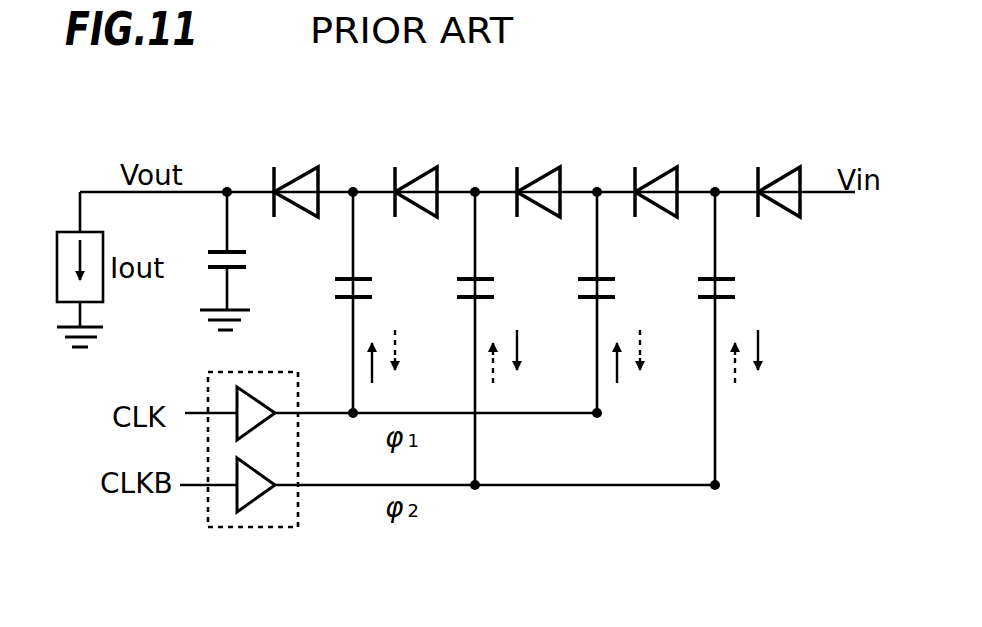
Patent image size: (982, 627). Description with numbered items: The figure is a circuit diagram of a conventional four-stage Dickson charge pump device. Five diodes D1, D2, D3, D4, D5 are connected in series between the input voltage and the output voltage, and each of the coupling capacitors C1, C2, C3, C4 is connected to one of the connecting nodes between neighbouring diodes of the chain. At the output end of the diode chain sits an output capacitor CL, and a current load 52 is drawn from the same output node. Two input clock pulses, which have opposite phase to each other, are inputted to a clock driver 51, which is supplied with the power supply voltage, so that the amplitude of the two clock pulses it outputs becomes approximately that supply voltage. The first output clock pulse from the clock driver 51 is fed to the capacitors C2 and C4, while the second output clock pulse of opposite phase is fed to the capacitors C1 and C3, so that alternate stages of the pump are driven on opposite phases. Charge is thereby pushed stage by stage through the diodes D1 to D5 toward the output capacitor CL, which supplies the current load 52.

The clock driver 51 is at (228, 517).
The current load 52 is at (57, 292).
The diode D1 is at (807, 139).
The diode D2 is at (680, 139).
The diode D3 is at (562, 139).
The diode D4 is at (680, 139).
The diode D5 is at (320, 139).
The coupling capacitor C1 is at (737, 327).
The coupling capacitor C2 is at (618, 327).
The coupling capacitor C3 is at (496, 327).
The coupling capacitor C4 is at (374, 327).
The output capacitor CL is at (245, 287).